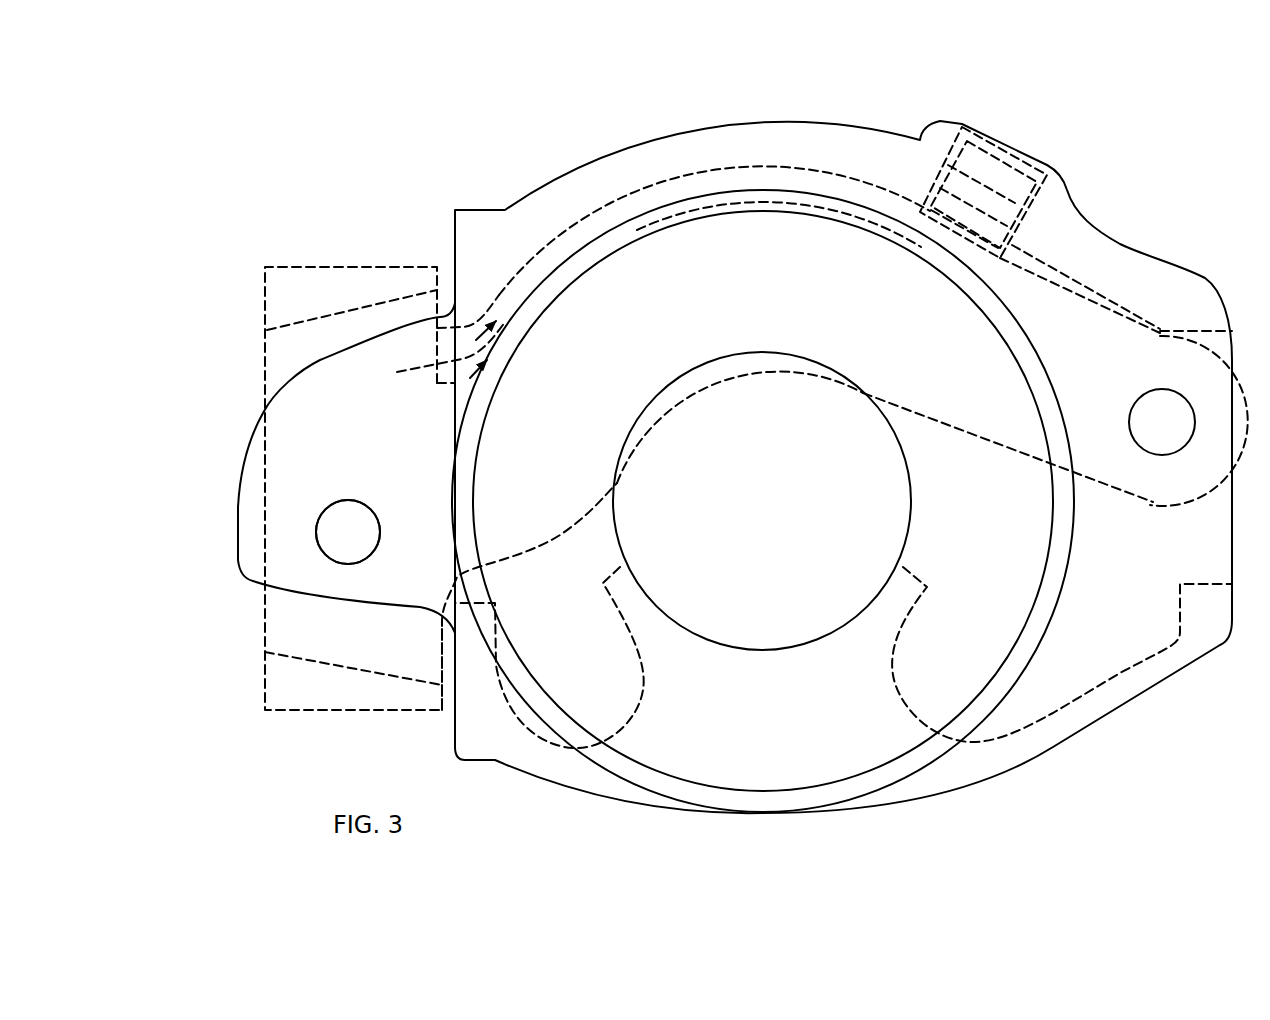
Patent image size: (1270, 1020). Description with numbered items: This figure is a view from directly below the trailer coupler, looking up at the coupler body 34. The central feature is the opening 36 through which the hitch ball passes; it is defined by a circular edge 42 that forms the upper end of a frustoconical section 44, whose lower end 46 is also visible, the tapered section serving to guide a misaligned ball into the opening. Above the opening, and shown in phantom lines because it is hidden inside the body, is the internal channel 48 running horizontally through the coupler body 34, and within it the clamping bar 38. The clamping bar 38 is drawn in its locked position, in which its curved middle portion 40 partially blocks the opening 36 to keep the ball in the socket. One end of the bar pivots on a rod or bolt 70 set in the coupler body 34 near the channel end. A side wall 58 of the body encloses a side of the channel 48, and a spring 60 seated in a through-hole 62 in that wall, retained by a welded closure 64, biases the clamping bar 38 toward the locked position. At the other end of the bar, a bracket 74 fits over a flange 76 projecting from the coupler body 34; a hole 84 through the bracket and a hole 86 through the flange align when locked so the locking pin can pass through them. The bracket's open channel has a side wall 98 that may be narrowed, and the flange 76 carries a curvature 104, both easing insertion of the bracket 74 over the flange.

The coupler body 34 is at (547, 190).
The opening 36 is at (643, 504).
The clamping bar 38 is at (960, 432).
The curved middle portion 40 is at (700, 402).
The circular edge 42 is at (702, 366).
The frustoconical section 44 is at (930, 374).
The lower end 46 is at (1042, 382).
The internal channel 48 is at (431, 342).
The side wall 58 is at (722, 165).
The spring 60 is at (935, 150).
The through-hole 62 is at (1026, 145).
The welded closure 64 is at (993, 140).
The rod or bolt 70 is at (1160, 442).
The bracket 74 is at (325, 266).
The flange 76 is at (236, 506).
The hole 84 is at (331, 527).
The hole 86 is at (362, 521).
The side wall 98 is at (306, 315).
The curvature 104 is at (290, 383).